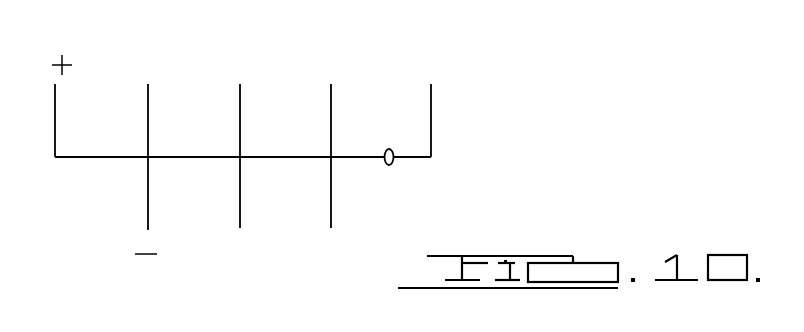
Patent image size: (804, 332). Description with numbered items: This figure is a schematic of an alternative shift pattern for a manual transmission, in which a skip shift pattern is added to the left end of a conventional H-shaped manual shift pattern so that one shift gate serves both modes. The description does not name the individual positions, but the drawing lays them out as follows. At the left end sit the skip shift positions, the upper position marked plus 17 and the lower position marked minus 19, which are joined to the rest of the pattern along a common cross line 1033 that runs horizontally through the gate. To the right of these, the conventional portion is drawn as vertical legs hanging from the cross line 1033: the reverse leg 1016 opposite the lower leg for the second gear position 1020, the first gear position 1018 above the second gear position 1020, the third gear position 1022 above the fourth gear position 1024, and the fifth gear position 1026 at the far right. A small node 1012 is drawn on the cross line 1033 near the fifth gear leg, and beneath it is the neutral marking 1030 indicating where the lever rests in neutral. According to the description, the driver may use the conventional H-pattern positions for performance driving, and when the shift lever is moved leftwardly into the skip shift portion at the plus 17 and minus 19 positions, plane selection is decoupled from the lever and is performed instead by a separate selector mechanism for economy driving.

The positive terminal 17 is at (55, 84).
The negative terminal 19 is at (148, 226).
The R terminal 1016 is at (148, 84).
The terminal 1 1018 is at (240, 84).
The terminal 2 1020 is at (240, 228).
The terminal 3 1022 is at (331, 84).
The terminal 4 1024 is at (332, 228).
The terminal 5 1026 is at (431, 84).
The neutral node 1012 is at (392, 150).
The neutral label N 1030 is at (410, 169).
The common bus line 1033 is at (283, 157).